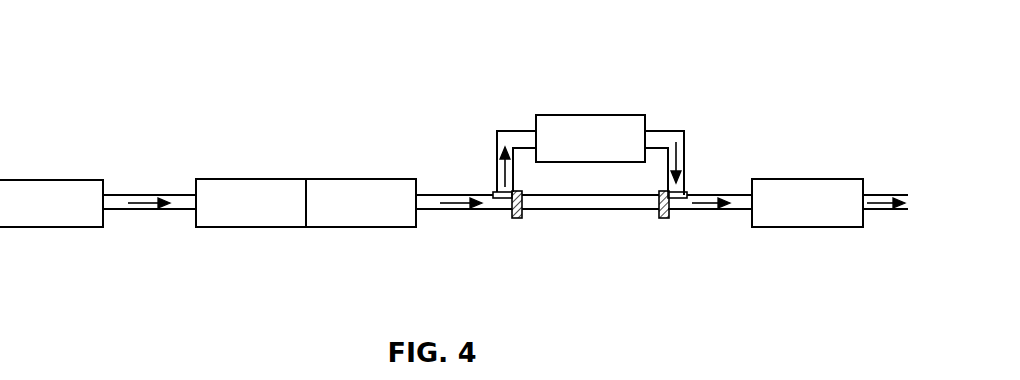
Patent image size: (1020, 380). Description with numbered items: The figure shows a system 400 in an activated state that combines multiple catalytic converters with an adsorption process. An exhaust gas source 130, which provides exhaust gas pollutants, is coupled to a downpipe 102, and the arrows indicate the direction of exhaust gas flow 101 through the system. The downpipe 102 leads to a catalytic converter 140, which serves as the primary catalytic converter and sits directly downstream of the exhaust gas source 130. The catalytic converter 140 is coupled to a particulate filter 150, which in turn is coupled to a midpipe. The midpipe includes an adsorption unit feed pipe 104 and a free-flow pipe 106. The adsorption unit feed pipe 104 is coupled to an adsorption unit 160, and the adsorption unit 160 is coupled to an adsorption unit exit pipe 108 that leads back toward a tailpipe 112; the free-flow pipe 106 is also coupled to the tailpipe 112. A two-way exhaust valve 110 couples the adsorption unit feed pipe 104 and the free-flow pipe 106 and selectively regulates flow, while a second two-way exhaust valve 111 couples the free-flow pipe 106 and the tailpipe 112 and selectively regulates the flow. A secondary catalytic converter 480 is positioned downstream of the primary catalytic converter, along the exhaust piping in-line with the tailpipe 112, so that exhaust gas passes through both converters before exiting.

The system 400 is at (163, 42).
The exhaust gas source 130 is at (70, 217).
The downpipe 102 is at (121, 195).
The exhaust gas flow 101 is at (152, 207).
The catalytic converter 140 is at (272, 217).
The particulate filter 150 is at (383, 217).
The free-flow pipe 106 is at (612, 210).
The adsorption unit feed pipe 104 is at (496, 140).
The adsorption unit 160 is at (612, 152).
The adsorption unit exit pipe 108 is at (683, 131).
The two-way exhaust valve 110 is at (516, 219).
The two-way exhaust valve 111 is at (665, 219).
The secondary catalytic converter 480 is at (829, 217).
The tailpipe 112 is at (885, 210).